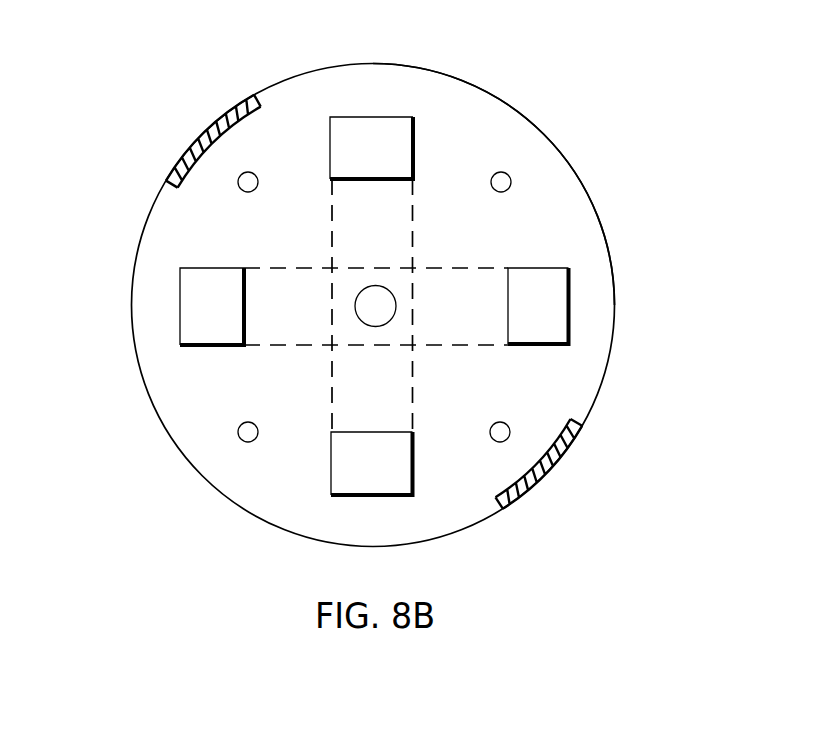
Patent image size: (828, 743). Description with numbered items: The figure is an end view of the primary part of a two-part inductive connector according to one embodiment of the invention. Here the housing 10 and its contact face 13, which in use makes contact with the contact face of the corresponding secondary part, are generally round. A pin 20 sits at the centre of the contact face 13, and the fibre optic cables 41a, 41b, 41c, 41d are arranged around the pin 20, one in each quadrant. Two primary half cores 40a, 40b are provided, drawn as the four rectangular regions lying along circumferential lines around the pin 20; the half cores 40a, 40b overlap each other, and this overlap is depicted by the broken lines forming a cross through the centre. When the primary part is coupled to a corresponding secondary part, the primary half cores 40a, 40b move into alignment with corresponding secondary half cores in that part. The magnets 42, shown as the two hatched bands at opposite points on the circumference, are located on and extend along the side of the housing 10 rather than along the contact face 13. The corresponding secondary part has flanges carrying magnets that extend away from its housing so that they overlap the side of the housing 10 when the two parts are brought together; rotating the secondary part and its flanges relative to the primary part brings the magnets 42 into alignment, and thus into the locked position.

The housing 10 is at (443, 75).
The contact face 13 is at (532, 147).
The pin 20 is at (370, 312).
The primary half core 40a is at (358, 117).
The primary half core 40b is at (180, 306).
The fibre optic cable 41a is at (248, 182).
The fibre optic cable 41b is at (500, 182).
The fibre optic cable 41c is at (507, 430).
The fibre optic cable 41d is at (245, 430).
The magnets 42 is at (202, 135).